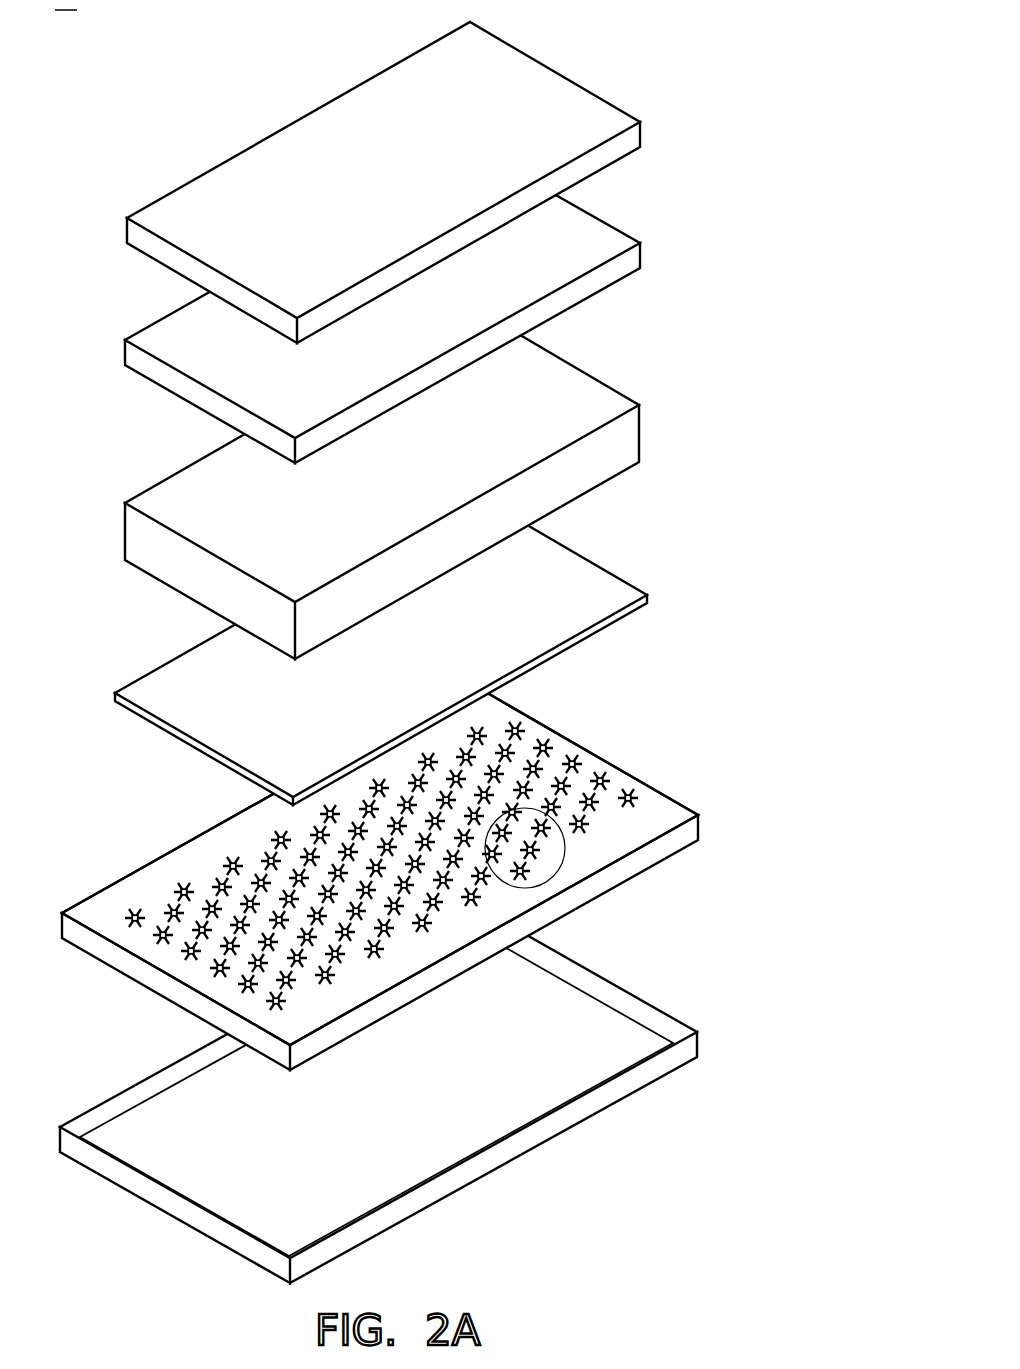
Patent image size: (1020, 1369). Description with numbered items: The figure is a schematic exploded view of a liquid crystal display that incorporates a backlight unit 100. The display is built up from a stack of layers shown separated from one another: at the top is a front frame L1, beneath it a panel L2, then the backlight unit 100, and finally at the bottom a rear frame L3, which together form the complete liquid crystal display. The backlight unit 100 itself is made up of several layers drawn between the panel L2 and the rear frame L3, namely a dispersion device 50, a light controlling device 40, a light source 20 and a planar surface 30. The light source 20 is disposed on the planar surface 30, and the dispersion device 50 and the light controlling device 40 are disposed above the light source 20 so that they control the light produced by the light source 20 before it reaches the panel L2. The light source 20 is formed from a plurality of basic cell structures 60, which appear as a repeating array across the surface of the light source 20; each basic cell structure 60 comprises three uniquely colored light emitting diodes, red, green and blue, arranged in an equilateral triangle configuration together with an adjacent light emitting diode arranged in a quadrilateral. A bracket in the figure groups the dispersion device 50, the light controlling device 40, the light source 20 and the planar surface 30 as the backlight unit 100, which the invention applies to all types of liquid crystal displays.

The backlight unit 100 is at (769, 385).
The front frame L1 is at (610, 122).
The panel L2 is at (610, 243).
The dispersion device 50 is at (640, 405).
The light controlling device 40 is at (650, 598).
The light source 20 is at (635, 787).
The planar surface 30 is at (662, 848).
The basic cell structure 60 is at (556, 878).
The rear frame L3 is at (648, 1068).